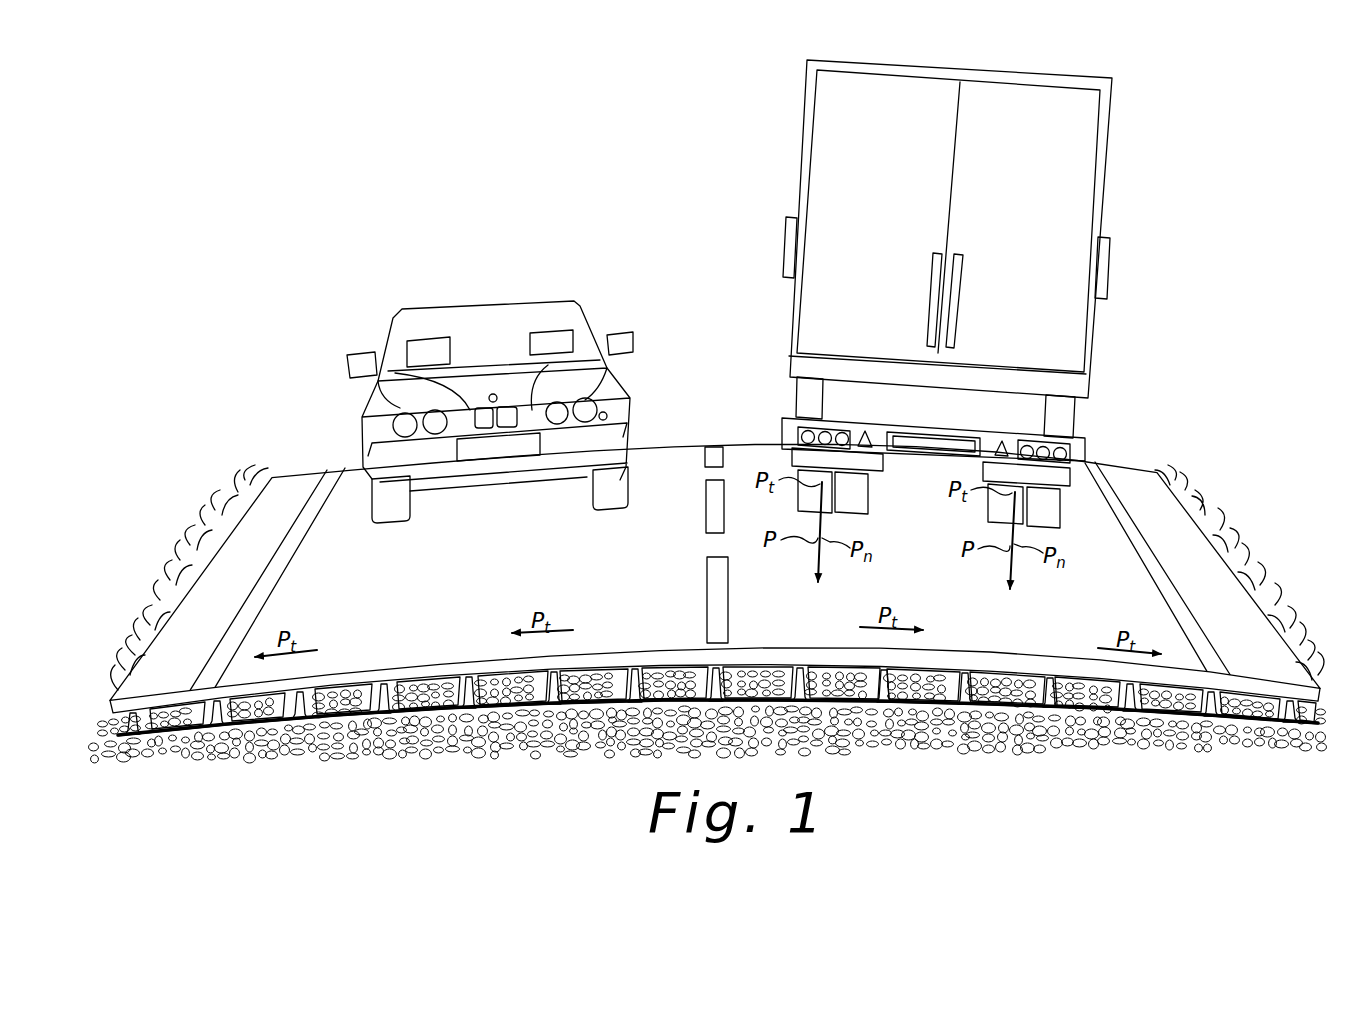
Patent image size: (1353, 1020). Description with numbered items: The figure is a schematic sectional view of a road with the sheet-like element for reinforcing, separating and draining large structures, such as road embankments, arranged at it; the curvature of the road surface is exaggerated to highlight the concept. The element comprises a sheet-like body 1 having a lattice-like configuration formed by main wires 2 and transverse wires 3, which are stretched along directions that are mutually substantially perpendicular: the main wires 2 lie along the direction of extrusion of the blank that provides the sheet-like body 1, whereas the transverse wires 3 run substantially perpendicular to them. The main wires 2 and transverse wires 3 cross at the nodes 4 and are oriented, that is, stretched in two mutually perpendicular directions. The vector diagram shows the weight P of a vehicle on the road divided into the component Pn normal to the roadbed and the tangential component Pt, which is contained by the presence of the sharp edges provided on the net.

The sheet-like body 1 is at (515, 704).
The main wires 2 is at (468, 678).
The transverse wires 3 is at (600, 703).
The nodes 4 is at (220, 728).